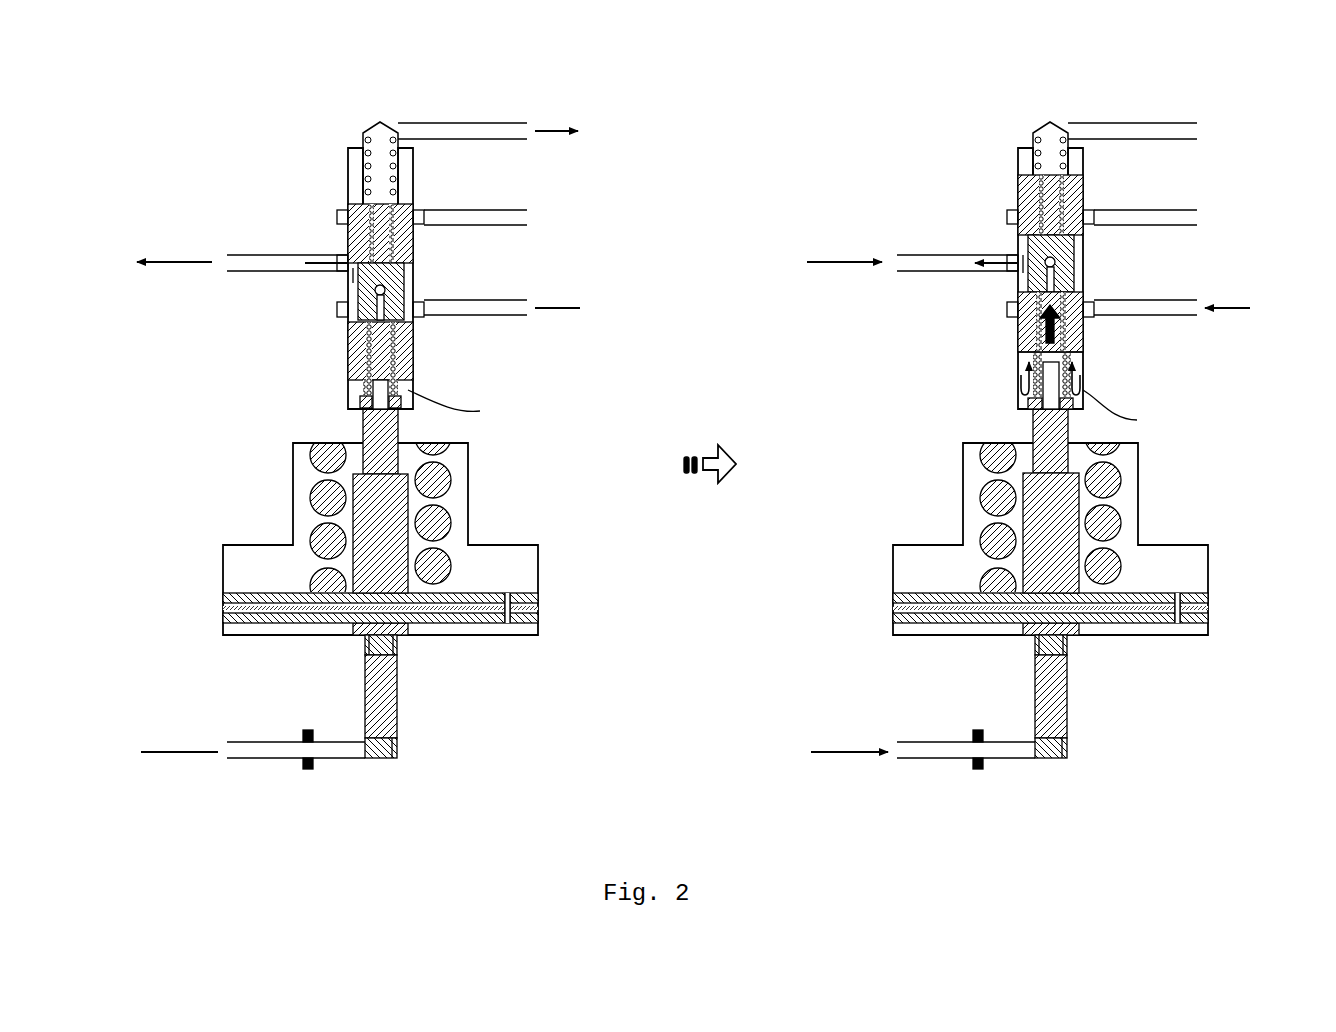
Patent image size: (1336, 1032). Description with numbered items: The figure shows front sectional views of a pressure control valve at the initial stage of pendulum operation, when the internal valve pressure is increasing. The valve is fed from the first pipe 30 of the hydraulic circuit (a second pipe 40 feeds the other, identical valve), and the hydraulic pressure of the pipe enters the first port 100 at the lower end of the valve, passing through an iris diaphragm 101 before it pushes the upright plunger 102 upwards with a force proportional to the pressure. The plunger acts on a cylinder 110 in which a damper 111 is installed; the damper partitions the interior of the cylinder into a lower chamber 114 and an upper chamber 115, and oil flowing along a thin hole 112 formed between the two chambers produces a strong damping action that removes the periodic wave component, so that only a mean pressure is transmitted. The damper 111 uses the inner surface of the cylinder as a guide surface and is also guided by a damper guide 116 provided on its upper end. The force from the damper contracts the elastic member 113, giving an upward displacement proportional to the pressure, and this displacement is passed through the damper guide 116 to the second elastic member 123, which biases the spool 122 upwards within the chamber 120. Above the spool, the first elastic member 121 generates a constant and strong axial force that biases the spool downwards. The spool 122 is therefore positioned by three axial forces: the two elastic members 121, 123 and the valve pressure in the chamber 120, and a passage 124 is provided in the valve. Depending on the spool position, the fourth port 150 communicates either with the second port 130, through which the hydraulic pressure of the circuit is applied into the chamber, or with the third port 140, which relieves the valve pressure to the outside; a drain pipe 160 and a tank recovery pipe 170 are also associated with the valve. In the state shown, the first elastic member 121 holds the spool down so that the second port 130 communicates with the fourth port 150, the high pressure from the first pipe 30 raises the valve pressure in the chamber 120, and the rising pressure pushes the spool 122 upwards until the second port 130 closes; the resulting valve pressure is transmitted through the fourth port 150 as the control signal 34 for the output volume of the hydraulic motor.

The pipe 30 is at (703, 566).
The pipe 40 is at (256, 762).
The control signal 34 is at (577, 289).
The first port 100 is at (363, 760).
The iris diaphragm 101 is at (310, 771).
The plunger 102 is at (400, 697).
The cylinder 110 is at (671, 566).
The damper 111 is at (243, 596).
The thin hole 112 is at (512, 593).
The elastic member 113 is at (451, 521).
The lower chamber 114 is at (257, 627).
The upper chamber 115 is at (242, 566).
The damper guide 116 is at (400, 422).
The chamber 120 is at (345, 402).
The first elastic member 121 is at (357, 150).
The spool 122 is at (350, 203).
The second elastic member 123 is at (366, 390).
The passage 124 is at (363, 288).
The second port 130 is at (416, 307).
The third port 140 is at (418, 212).
The fourth port 150 is at (343, 253).
The drain pipe 160 is at (504, 124).
The tank recovery pipe 170 is at (516, 224).